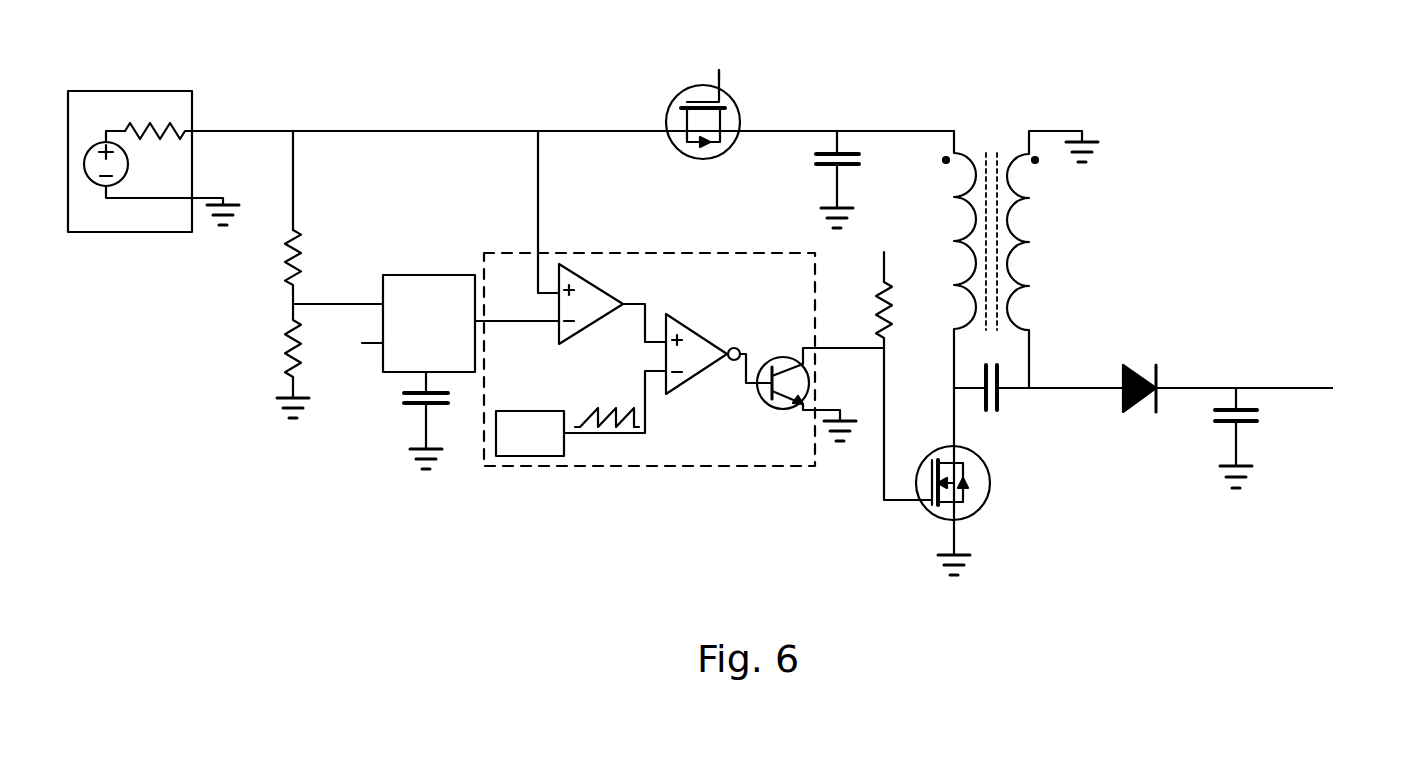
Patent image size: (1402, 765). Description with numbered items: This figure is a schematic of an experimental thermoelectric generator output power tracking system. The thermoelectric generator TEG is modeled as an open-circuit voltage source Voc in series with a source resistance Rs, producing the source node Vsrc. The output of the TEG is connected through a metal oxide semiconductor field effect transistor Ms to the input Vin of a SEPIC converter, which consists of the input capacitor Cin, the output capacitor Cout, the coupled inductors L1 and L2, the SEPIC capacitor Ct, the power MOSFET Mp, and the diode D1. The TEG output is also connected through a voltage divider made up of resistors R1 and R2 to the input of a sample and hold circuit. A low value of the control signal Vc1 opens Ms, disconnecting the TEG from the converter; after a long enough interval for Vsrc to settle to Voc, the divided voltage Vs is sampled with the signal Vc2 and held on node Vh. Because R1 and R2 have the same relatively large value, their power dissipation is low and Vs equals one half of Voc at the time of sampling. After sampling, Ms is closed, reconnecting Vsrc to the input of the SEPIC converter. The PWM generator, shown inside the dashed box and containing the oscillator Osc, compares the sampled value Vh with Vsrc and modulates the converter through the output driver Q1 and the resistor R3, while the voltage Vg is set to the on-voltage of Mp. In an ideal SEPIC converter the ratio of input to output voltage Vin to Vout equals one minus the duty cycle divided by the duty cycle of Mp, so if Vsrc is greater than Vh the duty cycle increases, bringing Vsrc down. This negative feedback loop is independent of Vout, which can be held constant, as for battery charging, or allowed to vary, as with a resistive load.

The thermoelectric generator TEG is at (153, 177).
The open-circuit voltage Voc is at (156, 164).
The source resistance Rs is at (158, 114).
The source voltage node Vsrc is at (242, 117).
The voltage divider resistor R1 is at (273, 267).
The voltage divider resistor R2 is at (277, 361).
The divided voltage input Vs is at (338, 290).
The sampling control signal Vc2 is at (349, 342).
The held voltage node Vh is at (517, 306).
The PWM generator PWM is at (649, 377).
The oscillator Osc is at (567, 432).
The output driver transistor Q1 is at (812, 394).
The MOSFET switch Ms is at (703, 131).
The switch control signal Vc1 is at (718, 63).
The converter input voltage Vin is at (789, 117).
The input capacitor Cin is at (813, 179).
The gate supply voltage Vg is at (882, 253).
The driver resistor R3 is at (886, 391).
The coupled inductor L1 is at (960, 259).
The coupled inductor L2 is at (1052, 259).
The SEPIC capacitor Ct is at (1038, 402).
The power MOSFET Mp is at (970, 481).
The diode D1 is at (1227, 373).
The output voltage Vout is at (1345, 388).
The output capacitor Cout is at (1264, 438).